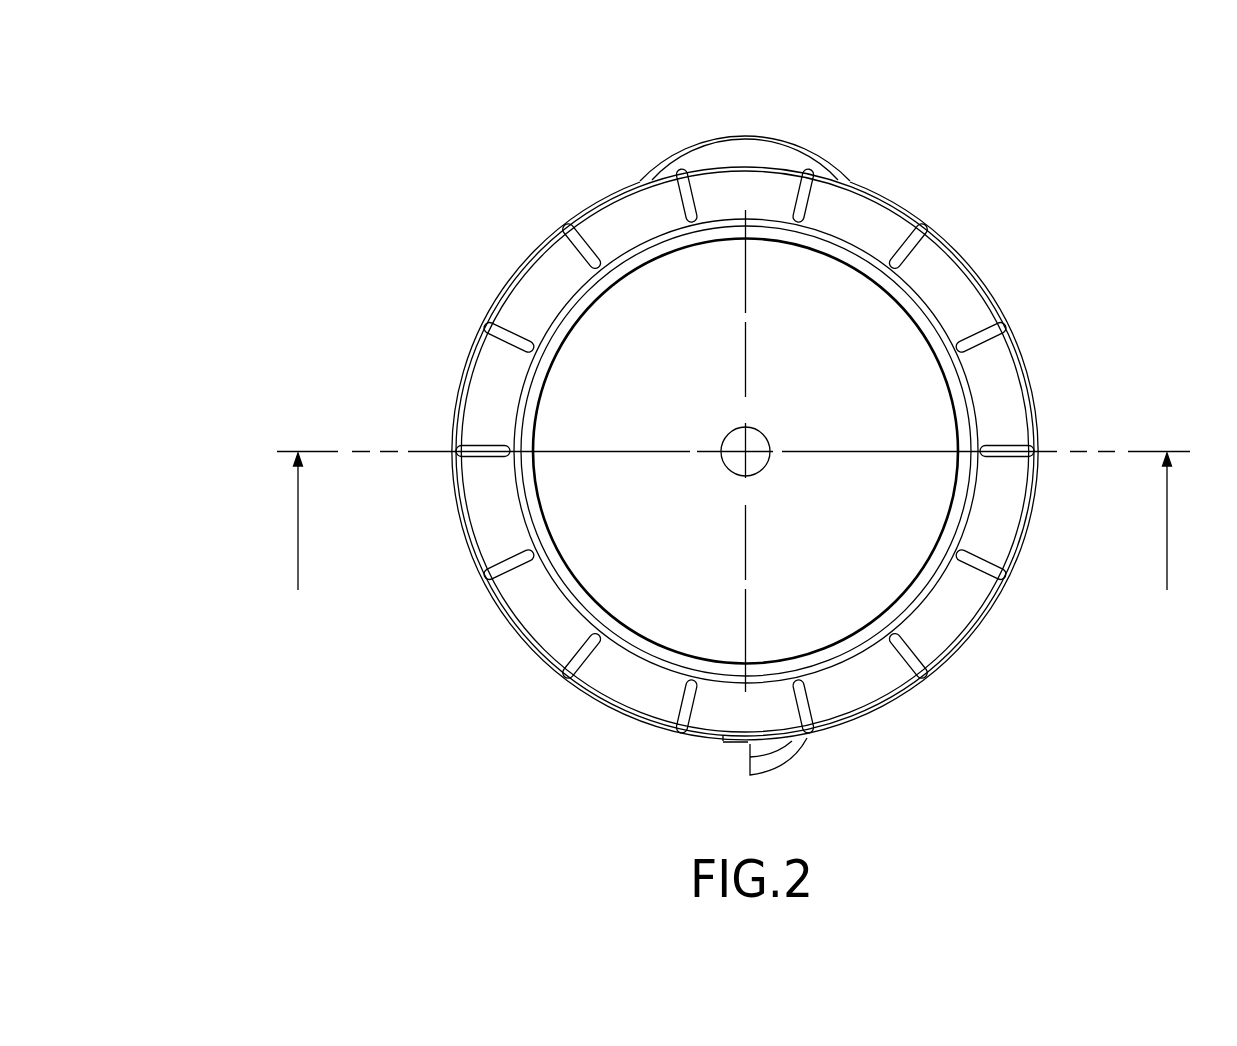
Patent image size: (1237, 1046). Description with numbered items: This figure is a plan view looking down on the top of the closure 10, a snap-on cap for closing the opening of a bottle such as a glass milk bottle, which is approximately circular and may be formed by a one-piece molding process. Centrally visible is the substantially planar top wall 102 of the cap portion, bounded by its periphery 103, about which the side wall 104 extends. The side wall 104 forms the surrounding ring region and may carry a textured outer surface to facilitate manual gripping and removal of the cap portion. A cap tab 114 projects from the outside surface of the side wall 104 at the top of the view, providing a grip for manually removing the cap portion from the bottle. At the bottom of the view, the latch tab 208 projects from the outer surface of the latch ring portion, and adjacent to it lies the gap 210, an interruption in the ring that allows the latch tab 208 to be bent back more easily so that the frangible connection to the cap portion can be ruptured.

The closure 10 is at (325, 237).
The top wall 102 is at (806, 303).
The periphery 103 is at (920, 328).
The side wall 104 is at (958, 614).
The cap tab 114 is at (733, 146).
The latch tab 208 is at (795, 758).
The gap 210 is at (733, 747).